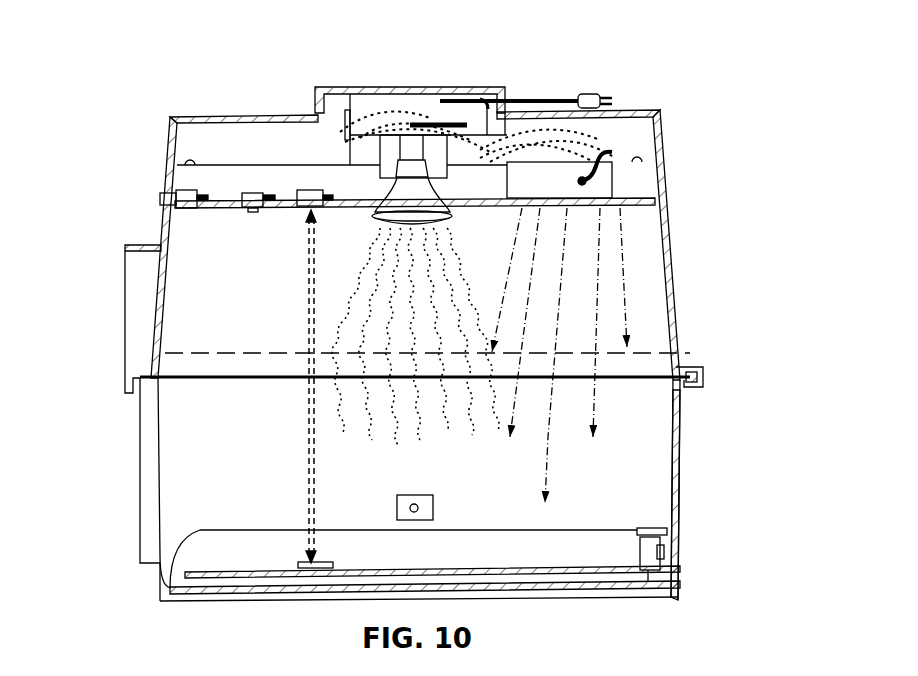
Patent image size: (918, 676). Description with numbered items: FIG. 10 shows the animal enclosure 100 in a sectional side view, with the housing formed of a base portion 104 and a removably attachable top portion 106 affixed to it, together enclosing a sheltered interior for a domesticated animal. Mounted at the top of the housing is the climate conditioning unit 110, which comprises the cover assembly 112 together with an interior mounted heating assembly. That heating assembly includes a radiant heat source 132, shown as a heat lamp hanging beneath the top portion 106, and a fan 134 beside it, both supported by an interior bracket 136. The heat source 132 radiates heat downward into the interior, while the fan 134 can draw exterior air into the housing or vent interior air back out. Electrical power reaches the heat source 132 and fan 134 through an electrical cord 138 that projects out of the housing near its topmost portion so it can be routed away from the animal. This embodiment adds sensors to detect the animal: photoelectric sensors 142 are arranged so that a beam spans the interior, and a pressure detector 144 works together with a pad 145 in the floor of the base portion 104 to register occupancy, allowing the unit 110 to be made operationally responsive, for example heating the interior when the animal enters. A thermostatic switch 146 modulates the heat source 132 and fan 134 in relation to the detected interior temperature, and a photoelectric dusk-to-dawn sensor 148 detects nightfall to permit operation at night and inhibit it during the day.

The sanitizing apparatus 100 is at (160, 65).
The base portion 104 is at (683, 450).
The top portion 106 is at (677, 268).
The climate conditioning unit 110 is at (421, 58).
The cover assembly 112 is at (386, 86).
The radiant heat source 132 is at (393, 207).
The fan 134 is at (553, 176).
The interior bracket 136 is at (316, 160).
The electrical cord 138 is at (561, 90).
The photoelectric sensors 142 is at (304, 216).
The pressure detector 144 is at (636, 531).
The pad 145 is at (538, 560).
The thermostatic switch 146 is at (240, 216).
The photoelectric dusk-to-dawn sensor 148 is at (157, 200).